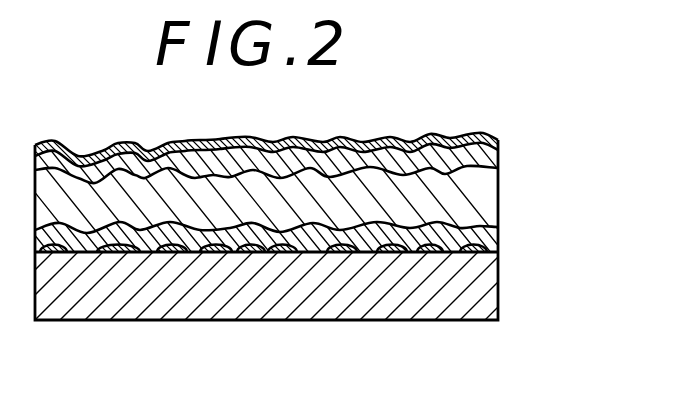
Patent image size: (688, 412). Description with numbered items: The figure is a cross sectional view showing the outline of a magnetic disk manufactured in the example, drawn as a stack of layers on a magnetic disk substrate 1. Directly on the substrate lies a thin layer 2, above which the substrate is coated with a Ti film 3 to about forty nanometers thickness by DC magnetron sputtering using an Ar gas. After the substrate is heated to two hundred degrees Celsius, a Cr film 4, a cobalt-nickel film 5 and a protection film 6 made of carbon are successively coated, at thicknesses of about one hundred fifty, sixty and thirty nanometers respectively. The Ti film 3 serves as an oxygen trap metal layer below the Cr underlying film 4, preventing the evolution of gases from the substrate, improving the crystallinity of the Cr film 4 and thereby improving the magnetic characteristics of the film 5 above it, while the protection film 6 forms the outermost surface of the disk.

The magnetic disk substrate 1 is at (490, 292).
The island-like underlayer 2 is at (498, 245).
The Ti film 3 is at (498, 233).
The Cr film 4 is at (485, 193).
The CoNi film 5 is at (498, 158).
The protection film 6 is at (498, 145).